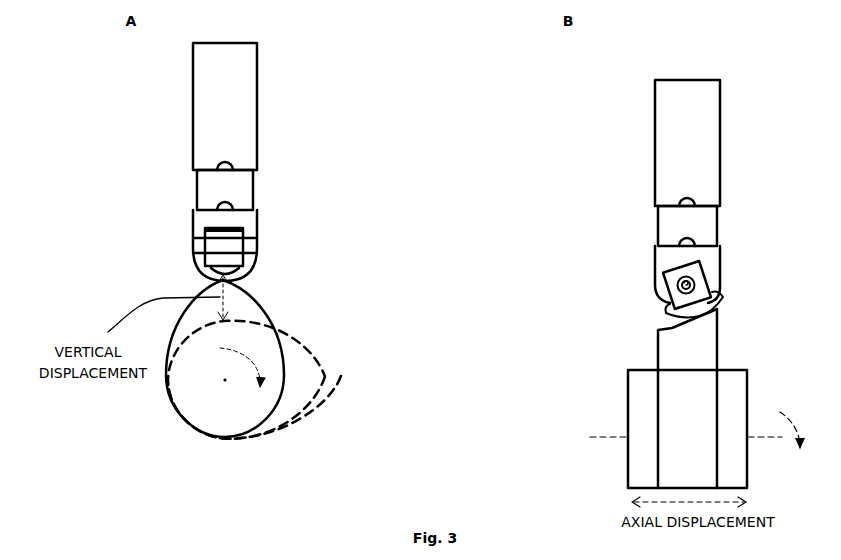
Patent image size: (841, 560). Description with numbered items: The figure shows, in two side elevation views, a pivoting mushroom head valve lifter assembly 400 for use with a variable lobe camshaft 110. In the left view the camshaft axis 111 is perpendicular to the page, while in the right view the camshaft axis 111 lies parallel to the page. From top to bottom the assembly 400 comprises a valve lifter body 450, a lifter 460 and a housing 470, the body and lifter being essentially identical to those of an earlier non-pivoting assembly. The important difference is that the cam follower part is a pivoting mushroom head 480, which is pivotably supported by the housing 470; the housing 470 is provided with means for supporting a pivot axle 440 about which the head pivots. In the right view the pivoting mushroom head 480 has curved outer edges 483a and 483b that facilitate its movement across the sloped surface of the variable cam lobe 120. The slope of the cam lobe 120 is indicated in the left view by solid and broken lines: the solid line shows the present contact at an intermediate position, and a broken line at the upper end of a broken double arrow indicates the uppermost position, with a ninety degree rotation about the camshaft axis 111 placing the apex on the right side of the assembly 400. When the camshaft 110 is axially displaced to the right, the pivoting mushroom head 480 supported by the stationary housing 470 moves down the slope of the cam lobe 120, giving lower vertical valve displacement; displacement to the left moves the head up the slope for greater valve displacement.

The pivoting mushroom head valve lifter assembly 400 is at (645, 139).
The valve lifter body 450 is at (762, 110).
The lifter 460 is at (752, 197).
The housing 470 is at (197, 219).
The pivoting mushroom head 480 is at (667, 302).
The pivot axle 440 is at (243, 248).
The curved outer edge 483a is at (724, 300).
The curved outer edge 483b is at (667, 313).
The variable cam lobe 120 is at (248, 341).
The camshaft axis 111 is at (225, 380).
The camshaft 110 is at (642, 471).